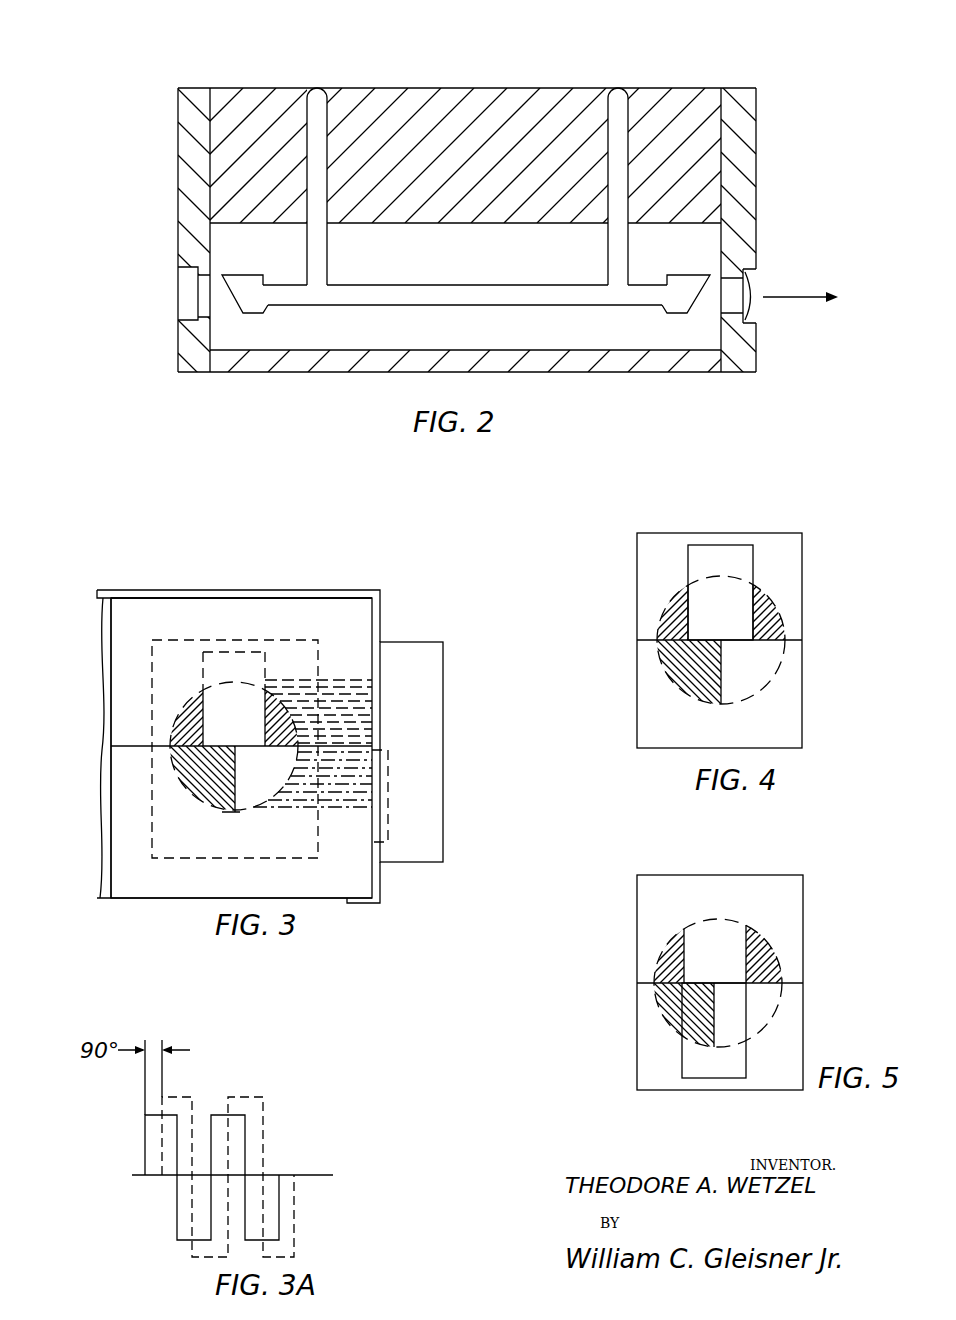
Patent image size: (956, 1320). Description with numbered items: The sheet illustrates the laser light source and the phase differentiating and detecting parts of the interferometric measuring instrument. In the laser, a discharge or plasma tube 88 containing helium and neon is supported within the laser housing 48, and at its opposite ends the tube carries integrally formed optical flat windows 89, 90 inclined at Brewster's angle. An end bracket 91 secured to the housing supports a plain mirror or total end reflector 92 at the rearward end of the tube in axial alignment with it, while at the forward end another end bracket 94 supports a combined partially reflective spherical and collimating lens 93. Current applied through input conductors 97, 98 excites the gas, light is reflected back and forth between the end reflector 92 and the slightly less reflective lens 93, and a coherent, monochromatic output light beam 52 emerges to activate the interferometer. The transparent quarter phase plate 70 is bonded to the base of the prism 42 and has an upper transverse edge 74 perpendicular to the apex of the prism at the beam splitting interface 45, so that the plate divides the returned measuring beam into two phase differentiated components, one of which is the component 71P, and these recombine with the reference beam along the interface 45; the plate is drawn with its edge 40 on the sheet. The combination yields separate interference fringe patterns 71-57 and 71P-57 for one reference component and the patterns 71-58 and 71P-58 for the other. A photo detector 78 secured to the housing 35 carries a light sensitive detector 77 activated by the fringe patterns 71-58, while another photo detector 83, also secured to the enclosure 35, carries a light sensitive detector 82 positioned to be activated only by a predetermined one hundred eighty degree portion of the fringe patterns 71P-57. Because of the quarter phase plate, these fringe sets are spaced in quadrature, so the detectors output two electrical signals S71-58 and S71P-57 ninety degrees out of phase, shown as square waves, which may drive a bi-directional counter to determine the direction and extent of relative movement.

In FIG. 2, the laser housing 48 is at (485, 98).
In FIG. 2, the input conductor 97 is at (320, 90).
In FIG. 2, the input conductor 98 is at (620, 90).
In FIG. 2, the end bracket 94 is at (750, 152).
In FIG. 2, the end bracket 91 is at (190, 198).
In FIG. 2, the end reflector 92 is at (190, 302).
In FIG. 2, the combined partially reflective spherical and collimating lens 93 is at (756, 294).
In FIG. 2, the coherent output light beam 52 is at (822, 300).
In FIG. 2, the plasma tube 88 is at (497, 293).
In FIG. 2, the optical flat window 89 is at (236, 312).
In FIG. 2, the optical flat window 90 is at (697, 312).
In FIG. 3, the housing 35 is at (113, 592).
In FIG. 3, the plate edge 40 is at (104, 620).
In FIG. 3, the prism 42 is at (353, 615).
In FIG. 3, the semi-transparent beam splitting interface 45 is at (106, 676).
In FIG. 3, the quarter phase plate 70 is at (325, 888).
In FIG. 3, the upper transverse edge 74 is at (126, 744).
In FIG. 3, the light sensitive detector 77 is at (232, 655).
In FIG. 4, the light sensitive detector 77 is at (728, 560).
In FIG. 3, the photo detector 78 is at (175, 640).
In FIG. 4, the photo detector 78 is at (672, 528).
In FIG. 3, the light sensitive detector 82 is at (386, 785).
In FIG. 5, the light sensitive detector 82 is at (727, 1072).
In FIG. 3, the photo detector 83 is at (445, 770).
In FIG. 5, the photo detector 83 is at (654, 1097).
In FIG. 3, the interference fringe pattern 71-57 is at (352, 700).
In FIG. 5, the interference fringe pattern 71-57 is at (657, 944).
In FIG. 3, the interference fringe pattern 71P-57 is at (350, 797).
In FIG. 5, the interference fringe pattern 71P-57 is at (664, 1031).
In FIG. 3, the phase differentiated beam component 71P is at (221, 815).
In FIG. 4, the interference fringe pattern 71-58 is at (657, 610).
In FIG. 4, the phase differentiated beam component 71P-58 is at (779, 684).
In FIG. 3A, the electrical signal S71-58 is at (145, 1155).
In FIG. 3A, the electrical signal S71P-57 is at (190, 1250).